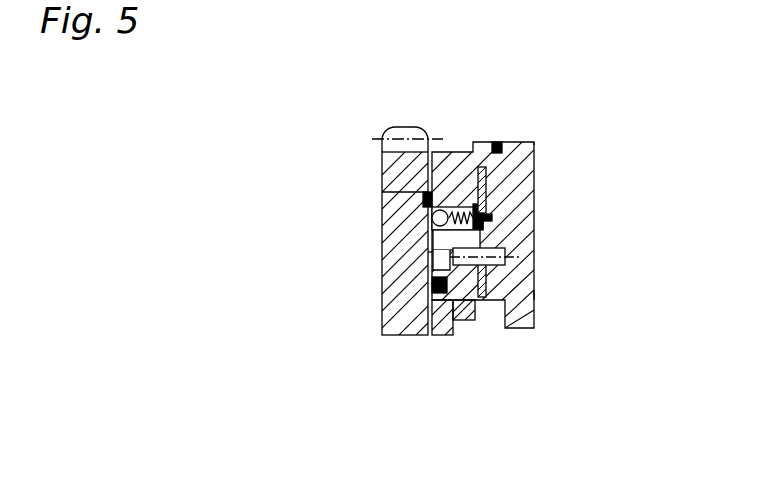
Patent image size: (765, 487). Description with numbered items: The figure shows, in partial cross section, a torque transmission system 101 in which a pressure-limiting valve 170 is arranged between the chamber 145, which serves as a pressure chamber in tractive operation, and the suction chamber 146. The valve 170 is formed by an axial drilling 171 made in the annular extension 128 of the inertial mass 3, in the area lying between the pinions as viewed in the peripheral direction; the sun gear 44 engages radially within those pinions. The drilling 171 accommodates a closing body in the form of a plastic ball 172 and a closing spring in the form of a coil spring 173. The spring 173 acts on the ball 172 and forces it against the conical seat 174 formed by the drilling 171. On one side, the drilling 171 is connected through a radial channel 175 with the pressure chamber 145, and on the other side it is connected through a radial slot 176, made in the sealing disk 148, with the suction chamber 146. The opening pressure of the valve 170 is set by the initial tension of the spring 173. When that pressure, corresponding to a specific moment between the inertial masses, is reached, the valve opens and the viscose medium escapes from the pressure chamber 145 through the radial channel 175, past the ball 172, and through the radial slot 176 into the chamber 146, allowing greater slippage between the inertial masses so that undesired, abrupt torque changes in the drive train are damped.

The inertial mass 3 is at (403, 167).
The pressure-limiting valve 170 is at (430, 206).
The axial drilling 171 is at (483, 235).
The plastic ball 172 is at (432, 233).
The coil spring 173 is at (485, 206).
The conical seat 174 is at (432, 221).
The radial channel 175 is at (425, 255).
The radial slot 176 is at (488, 229).
The annular extension 128 is at (428, 252).
The pressure chamber 145 is at (433, 272).
The suction chamber 146 is at (460, 258).
The sealing disk 148 is at (530, 295).
The sun gear 44 is at (473, 318).
The torque transmission system 101 is at (553, 130).